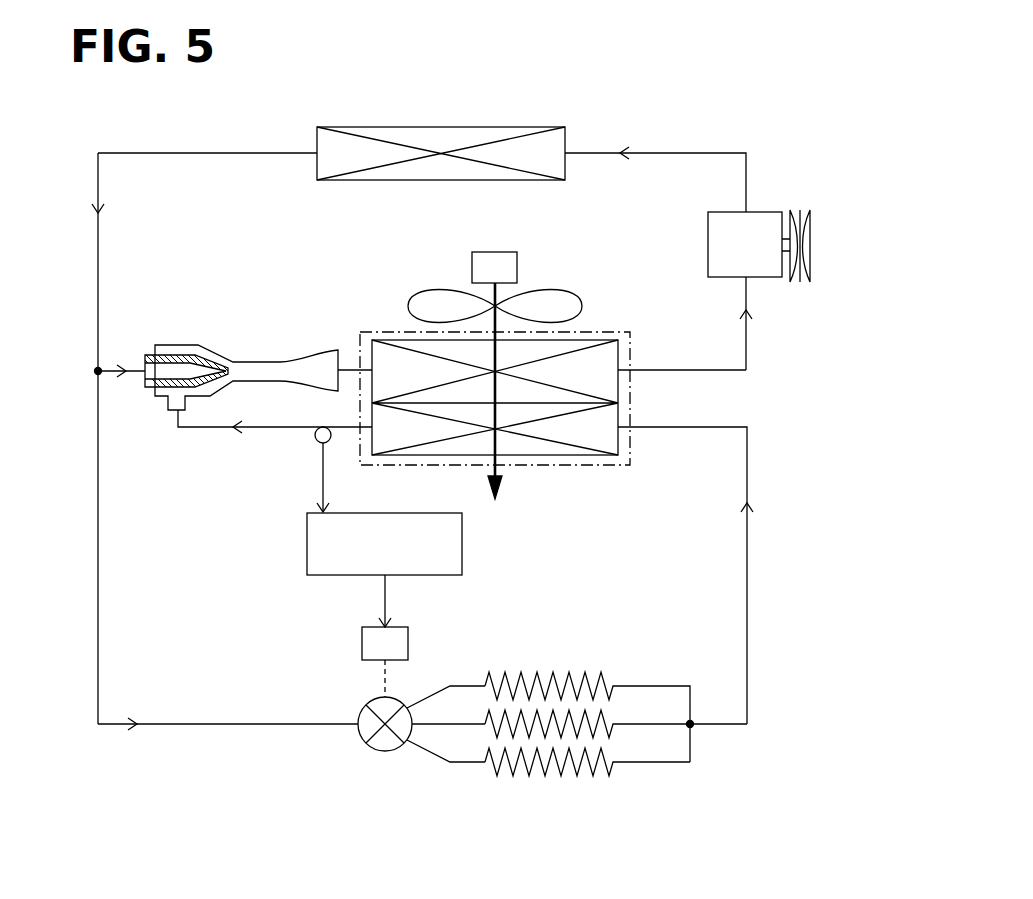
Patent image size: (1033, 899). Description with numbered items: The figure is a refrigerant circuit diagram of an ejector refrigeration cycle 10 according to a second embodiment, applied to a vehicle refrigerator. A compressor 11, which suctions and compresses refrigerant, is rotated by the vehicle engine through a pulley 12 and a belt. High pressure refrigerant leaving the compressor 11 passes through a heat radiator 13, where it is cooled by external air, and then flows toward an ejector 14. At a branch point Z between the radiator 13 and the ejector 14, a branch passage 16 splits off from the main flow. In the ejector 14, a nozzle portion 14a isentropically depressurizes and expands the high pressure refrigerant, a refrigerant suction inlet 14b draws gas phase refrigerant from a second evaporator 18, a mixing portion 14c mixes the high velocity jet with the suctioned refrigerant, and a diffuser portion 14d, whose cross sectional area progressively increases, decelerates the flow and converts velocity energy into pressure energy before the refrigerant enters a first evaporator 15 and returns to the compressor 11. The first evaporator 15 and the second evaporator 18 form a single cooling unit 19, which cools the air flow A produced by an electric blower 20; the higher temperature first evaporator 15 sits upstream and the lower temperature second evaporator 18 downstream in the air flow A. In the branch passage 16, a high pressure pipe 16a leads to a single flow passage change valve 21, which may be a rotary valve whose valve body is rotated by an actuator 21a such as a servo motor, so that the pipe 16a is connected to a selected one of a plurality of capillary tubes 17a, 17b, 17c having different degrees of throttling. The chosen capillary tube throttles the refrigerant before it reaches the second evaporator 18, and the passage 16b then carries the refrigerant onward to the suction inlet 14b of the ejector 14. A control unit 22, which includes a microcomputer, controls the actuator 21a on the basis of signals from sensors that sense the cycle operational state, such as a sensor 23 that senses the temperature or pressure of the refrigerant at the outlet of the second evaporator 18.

The ejector refrigeration cycle 10 is at (678, 126).
The compressor 11 is at (768, 212).
The pulley 12 is at (810, 231).
The heat radiator 13 is at (458, 126).
The ejector 14 is at (277, 356).
The nozzle portion 14a is at (192, 350).
The refrigerant suction inlet 14b is at (167, 400).
The mixing portion 14c is at (248, 359).
The diffuser portion 14d is at (318, 350).
The first evaporator 15 is at (590, 360).
The branch passage 16 is at (178, 729).
The high pressure pipe 16a is at (295, 728).
The branch passage outlet portion 16b is at (730, 727).
The capillary tube 17a is at (503, 768).
The capillary tube 17b is at (576, 740).
The capillary tube 17c is at (542, 674).
The second evaporator 18 is at (596, 430).
The cooling unit 19 is at (632, 445).
The electric blower 20 is at (576, 296).
The flow passage change valve 21 is at (385, 752).
The actuator 21a is at (362, 642).
The control unit 22 is at (307, 540).
The sensor 23 is at (316, 441).
The air flow A is at (499, 473).
The branch point Z is at (86, 371).